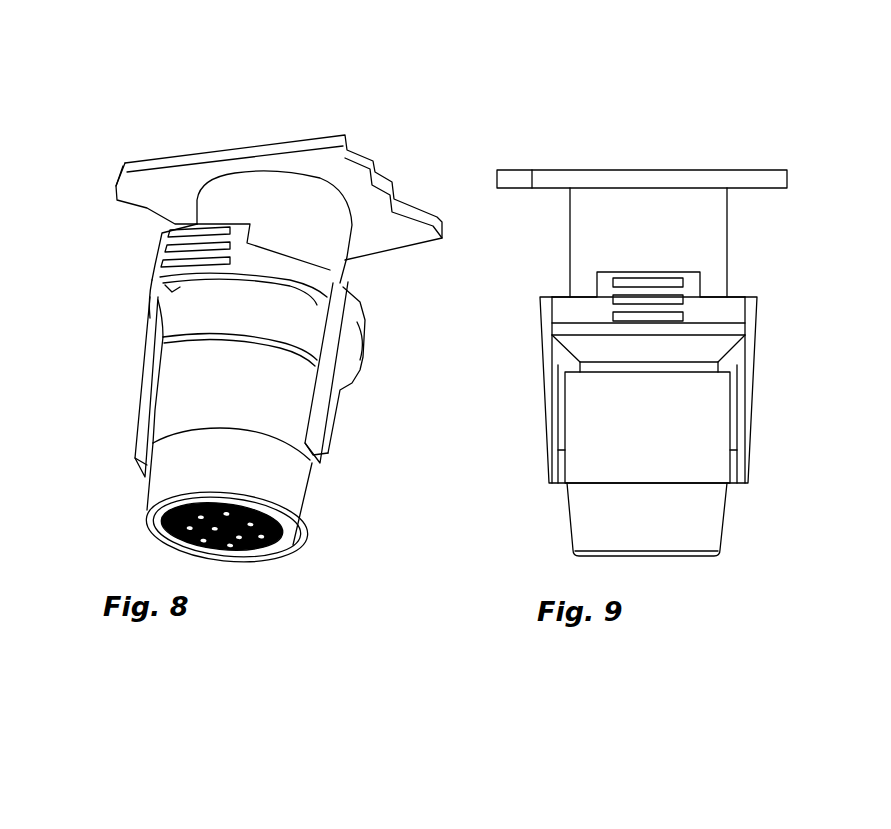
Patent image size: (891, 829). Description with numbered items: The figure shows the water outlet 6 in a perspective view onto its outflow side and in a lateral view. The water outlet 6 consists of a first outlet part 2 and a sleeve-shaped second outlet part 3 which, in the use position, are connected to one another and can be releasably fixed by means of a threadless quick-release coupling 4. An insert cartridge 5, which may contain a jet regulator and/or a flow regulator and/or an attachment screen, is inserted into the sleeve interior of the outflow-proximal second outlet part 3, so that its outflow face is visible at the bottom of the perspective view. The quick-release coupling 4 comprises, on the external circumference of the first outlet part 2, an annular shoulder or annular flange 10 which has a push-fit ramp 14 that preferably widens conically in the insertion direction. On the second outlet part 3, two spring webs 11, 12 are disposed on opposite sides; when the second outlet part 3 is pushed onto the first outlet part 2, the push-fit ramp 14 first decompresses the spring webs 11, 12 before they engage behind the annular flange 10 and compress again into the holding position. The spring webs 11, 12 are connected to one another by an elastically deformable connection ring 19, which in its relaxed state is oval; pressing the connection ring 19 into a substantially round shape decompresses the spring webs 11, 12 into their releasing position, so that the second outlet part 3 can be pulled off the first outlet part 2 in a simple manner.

In FIG. 8, the first outlet part 2 is at (310, 237).
In FIG. 9, the first outlet part 2 is at (668, 241).
In FIG. 8, the second outlet part 3 is at (266, 408).
In FIG. 9, the second outlet part 3 is at (666, 445).
In FIG. 8, the threadless quick-release coupling 4 is at (402, 333).
In FIG. 9, the threadless quick-release coupling 4 is at (782, 330).
In FIG. 8, the insert cartridge 5 is at (238, 562).
In FIG. 8, the water outlet 6 is at (396, 150).
In FIG. 9, the water outlet 6 is at (760, 152).
In FIG. 8, the annular flange 10 is at (178, 290).
In FIG. 8, the spring web 11 is at (330, 392).
In FIG. 9, the spring web 11 is at (747, 392).
In FIG. 8, the spring web 12 is at (158, 388).
In FIG. 9, the spring web 12 is at (550, 392).
In FIG. 8, the push-fit ramp 14 is at (177, 328).
In FIG. 8, the connection ring 19 is at (293, 281).
In FIG. 9, the connection ring 19 is at (717, 312).